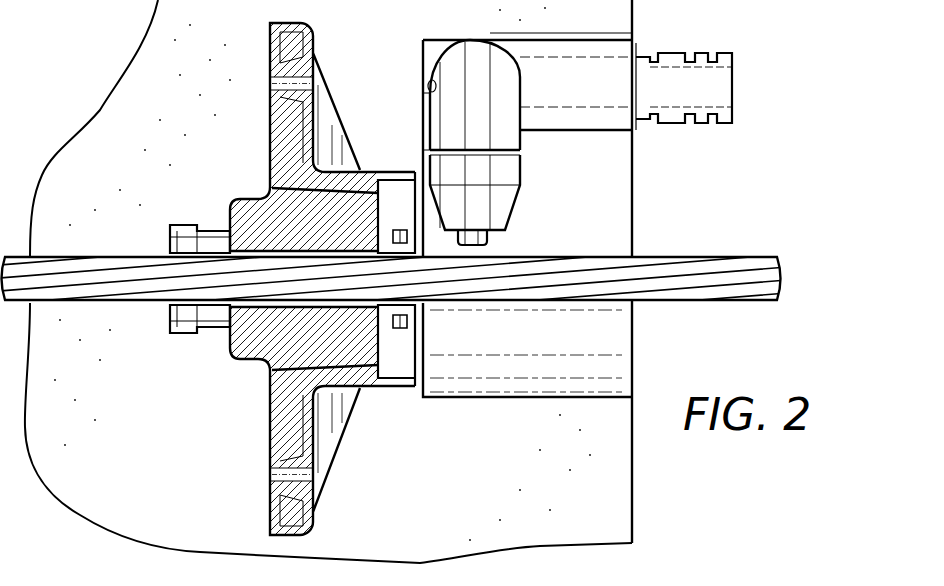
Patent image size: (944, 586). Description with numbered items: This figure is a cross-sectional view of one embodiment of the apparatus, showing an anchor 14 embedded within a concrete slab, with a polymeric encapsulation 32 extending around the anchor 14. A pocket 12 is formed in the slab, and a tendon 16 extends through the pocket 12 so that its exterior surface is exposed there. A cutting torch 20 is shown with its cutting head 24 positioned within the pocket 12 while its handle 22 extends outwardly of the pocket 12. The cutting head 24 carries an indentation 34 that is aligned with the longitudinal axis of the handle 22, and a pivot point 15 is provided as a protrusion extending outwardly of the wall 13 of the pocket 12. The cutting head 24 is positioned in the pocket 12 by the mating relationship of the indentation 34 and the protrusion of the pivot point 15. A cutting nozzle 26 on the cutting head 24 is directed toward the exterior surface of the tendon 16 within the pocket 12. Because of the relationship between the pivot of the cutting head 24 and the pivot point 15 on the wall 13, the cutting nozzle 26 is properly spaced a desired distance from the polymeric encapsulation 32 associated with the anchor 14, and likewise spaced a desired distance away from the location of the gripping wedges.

The pocket 12 is at (610, 237).
The wall 13 is at (427, 348).
The anchor 14 is at (283, 203).
The pivot point 15 is at (423, 80).
The tendon 16 is at (642, 293).
The cutting torch 20 is at (683, 37).
The handle 22 is at (673, 123).
The cutting head 24 is at (500, 130).
The cutting nozzle 26 is at (492, 238).
The polymeric encapsulation 32 is at (310, 123).
The indentation 34 is at (438, 84).